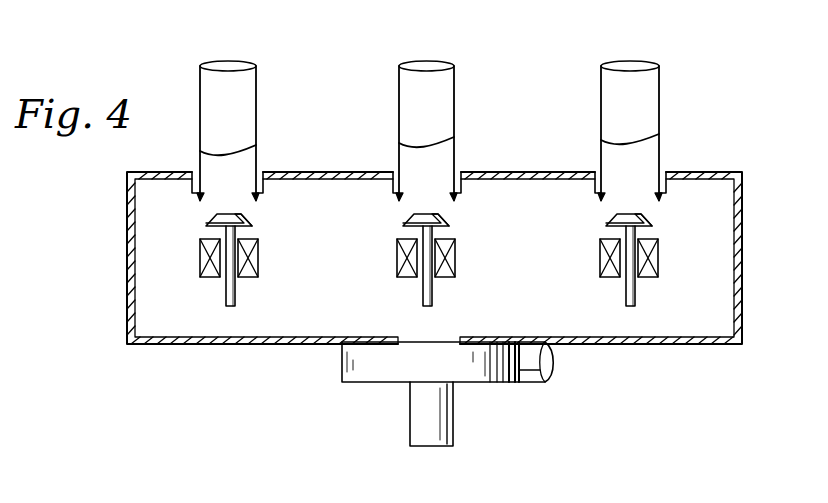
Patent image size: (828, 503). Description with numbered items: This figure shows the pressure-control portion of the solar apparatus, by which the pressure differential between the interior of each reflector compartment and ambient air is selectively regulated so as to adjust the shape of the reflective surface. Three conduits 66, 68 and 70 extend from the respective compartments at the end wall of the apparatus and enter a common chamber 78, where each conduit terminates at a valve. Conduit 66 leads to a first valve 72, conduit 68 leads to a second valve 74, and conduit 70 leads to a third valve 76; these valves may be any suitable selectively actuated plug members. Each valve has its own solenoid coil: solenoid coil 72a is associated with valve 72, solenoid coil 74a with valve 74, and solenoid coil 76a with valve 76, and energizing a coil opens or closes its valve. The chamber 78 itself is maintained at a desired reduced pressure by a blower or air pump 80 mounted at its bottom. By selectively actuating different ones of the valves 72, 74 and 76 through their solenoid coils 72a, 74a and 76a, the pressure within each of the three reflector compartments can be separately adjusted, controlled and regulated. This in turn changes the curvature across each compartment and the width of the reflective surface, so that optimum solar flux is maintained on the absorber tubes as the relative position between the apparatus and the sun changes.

The conduit 66 is at (234, 80).
The conduit 68 is at (434, 80).
The conduit 70 is at (636, 80).
The valve 72 is at (252, 224).
The solenoid coil 72a is at (257, 267).
The valve 74 is at (449, 224).
The solenoid coil 74a is at (397, 262).
The valve 76 is at (652, 224).
The solenoid coil 76a is at (600, 262).
The chamber 78 is at (625, 344).
The blower or air pump 80 is at (483, 372).